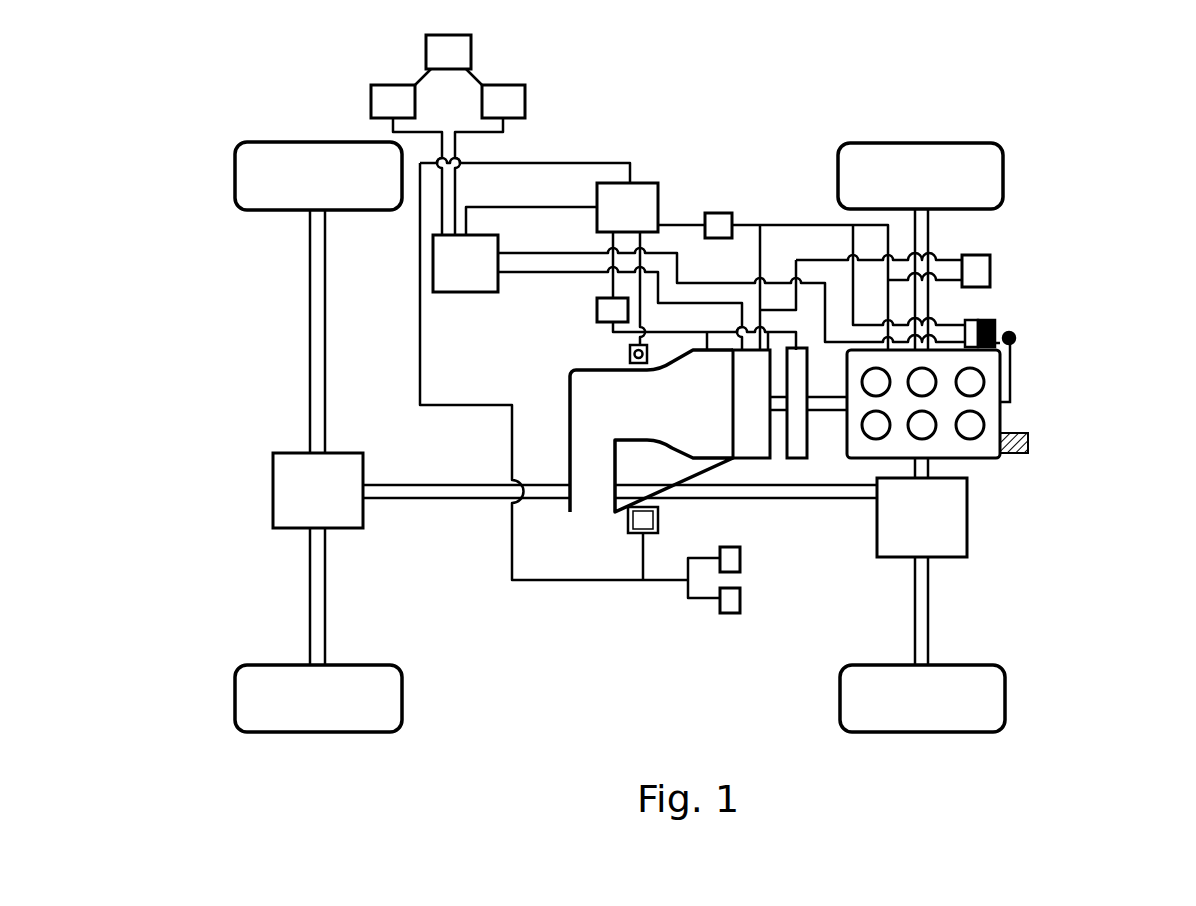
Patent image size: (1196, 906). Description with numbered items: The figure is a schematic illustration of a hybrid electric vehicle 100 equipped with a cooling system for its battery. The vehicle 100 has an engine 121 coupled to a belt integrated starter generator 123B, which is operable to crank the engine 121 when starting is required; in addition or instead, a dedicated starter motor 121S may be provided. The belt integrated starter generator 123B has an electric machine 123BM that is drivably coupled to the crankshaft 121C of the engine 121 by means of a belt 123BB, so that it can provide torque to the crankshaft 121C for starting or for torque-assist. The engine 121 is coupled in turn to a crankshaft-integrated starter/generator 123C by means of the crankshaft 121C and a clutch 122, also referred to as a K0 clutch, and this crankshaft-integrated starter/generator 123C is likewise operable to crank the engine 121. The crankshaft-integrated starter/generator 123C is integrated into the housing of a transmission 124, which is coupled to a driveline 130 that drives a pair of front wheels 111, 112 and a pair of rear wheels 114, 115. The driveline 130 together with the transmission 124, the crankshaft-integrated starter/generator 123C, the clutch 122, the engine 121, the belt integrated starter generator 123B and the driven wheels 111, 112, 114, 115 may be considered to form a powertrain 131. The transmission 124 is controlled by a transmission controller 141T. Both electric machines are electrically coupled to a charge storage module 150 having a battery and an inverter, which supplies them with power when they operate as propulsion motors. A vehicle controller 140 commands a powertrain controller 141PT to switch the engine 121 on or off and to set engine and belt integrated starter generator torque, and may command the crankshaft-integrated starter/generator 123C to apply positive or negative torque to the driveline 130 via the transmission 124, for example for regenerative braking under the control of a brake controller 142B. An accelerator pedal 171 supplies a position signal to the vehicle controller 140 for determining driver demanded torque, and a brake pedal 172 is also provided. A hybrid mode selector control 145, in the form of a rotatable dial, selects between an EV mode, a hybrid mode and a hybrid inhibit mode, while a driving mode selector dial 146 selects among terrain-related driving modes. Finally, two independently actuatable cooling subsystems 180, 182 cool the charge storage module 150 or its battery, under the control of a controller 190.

The hybrid electric vehicle 100 is at (1059, 108).
The front wheel 111 is at (990, 172).
The front wheel 112 is at (990, 718).
The rear wheel 114 is at (256, 150).
The rear wheel 115 is at (254, 710).
The engine 121 is at (988, 368).
The crankshaft 121C is at (836, 414).
The starter motor 121S is at (1030, 447).
The clutch 122 is at (797, 452).
The crankshaft-integrated starter/generator 123C is at (752, 450).
The belt integrated starter generator 123B is at (995, 323).
The electric machine 123BM is at (988, 330).
The belt 123BB is at (1012, 385).
The transmission 124 is at (597, 500).
The driveline 130 is at (455, 518).
The powertrain 131 is at (995, 475).
The vehicle controller 140 is at (650, 185).
The powertrain controller 141PT is at (720, 213).
The transmission controller 141T is at (597, 310).
The brake controller 142B is at (992, 262).
The hybrid mode selector control 145 is at (637, 535).
The driving mode selector dial 146 is at (630, 354).
The charge storage module 150 is at (468, 275).
The accelerator pedal 171 is at (728, 613).
The brake pedal 172 is at (727, 571).
The cooling subsystem 180 is at (378, 100).
The cooling subsystem 182 is at (513, 100).
The controller 190 is at (465, 52).